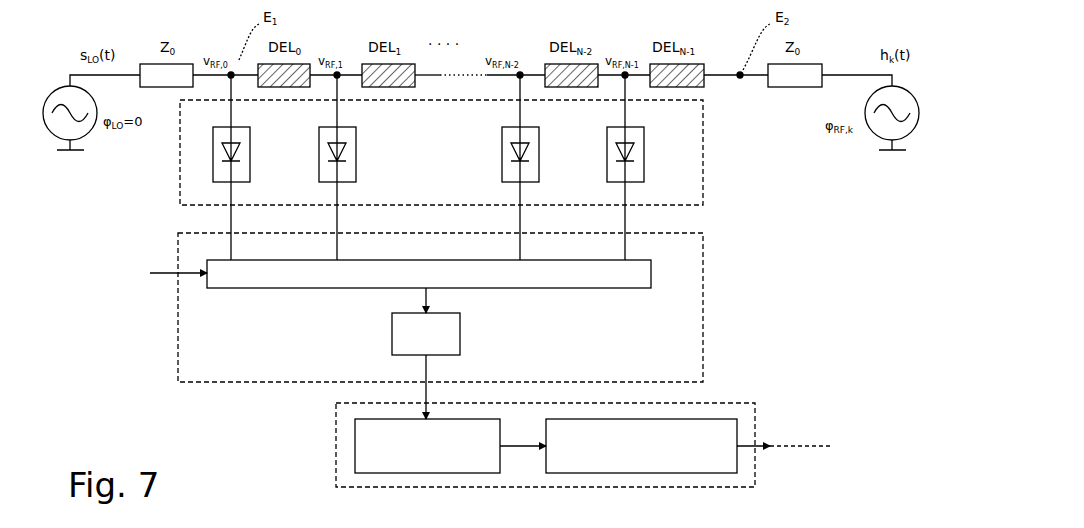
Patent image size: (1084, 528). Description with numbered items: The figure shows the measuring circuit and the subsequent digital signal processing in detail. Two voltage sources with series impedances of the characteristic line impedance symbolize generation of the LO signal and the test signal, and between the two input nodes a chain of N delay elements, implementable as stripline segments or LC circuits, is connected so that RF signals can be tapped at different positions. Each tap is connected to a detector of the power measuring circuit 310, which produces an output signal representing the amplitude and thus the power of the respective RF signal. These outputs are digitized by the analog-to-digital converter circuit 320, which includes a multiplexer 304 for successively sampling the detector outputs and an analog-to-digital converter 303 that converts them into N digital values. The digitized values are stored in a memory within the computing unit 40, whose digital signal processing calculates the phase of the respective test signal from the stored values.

The power measuring circuit 310 is at (703, 155).
The analog-to-digital converter circuit 320 is at (500, 307).
The multiplexer 304 is at (429, 274).
The analog-to-digital converter 303 is at (462, 333).
The computing unit 40 is at (336, 433).